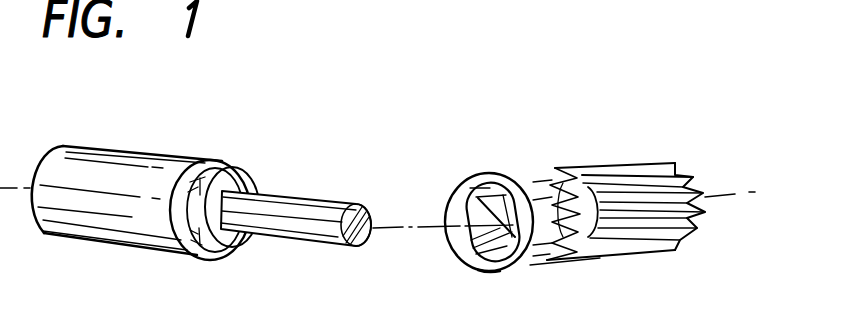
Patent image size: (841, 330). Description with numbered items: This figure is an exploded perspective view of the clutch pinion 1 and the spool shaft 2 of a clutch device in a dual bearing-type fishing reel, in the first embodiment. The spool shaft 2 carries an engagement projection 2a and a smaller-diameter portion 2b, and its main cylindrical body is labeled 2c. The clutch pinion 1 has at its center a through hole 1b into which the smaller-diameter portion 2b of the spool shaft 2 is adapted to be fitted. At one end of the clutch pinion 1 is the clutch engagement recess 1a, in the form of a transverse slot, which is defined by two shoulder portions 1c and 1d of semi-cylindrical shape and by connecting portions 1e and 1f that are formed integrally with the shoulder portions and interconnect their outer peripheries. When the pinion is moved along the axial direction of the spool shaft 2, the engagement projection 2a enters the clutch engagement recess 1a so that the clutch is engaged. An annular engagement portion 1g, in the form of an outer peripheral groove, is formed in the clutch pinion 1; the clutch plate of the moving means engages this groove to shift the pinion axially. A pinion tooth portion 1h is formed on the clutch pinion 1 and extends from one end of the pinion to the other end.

The clutch pinion 1 is at (557, 203).
The clutch engagement recess 1a is at (488, 193).
The through hole 1b is at (478, 237).
The shoulder portion 1c is at (453, 215).
The shoulder portion 1d is at (515, 205).
The connecting portion 1e is at (472, 181).
The connecting portion 1f is at (501, 266).
The annular engagement portion 1g is at (580, 227).
The pinion tooth portion 1h is at (593, 167).
The spool shaft 2 is at (201, 169).
The engagement projection 2a is at (248, 183).
The smaller-diameter portion 2b is at (318, 210).
The cylindrical body 2c is at (88, 157).